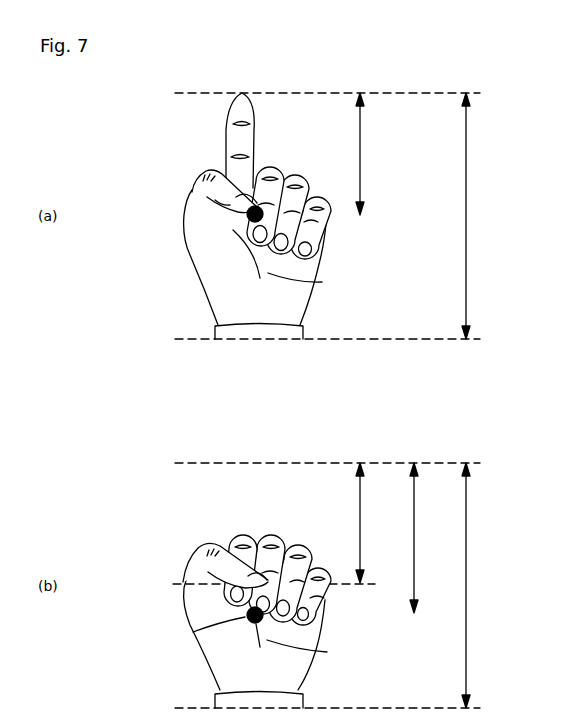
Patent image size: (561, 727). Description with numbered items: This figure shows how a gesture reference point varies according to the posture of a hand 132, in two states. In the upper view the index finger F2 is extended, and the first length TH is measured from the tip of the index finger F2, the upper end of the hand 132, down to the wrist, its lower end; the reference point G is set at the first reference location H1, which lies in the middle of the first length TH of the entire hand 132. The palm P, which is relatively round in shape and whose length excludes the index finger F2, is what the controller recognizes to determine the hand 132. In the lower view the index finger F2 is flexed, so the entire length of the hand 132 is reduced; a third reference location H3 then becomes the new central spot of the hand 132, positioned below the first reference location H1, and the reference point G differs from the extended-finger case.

The hand 132 is at (130, 80).
The index finger F2 is at (233, 133).
The reference point G is at (237, 207).
The palm P is at (322, 282).
The first reference location H1 is at (369, 338).
The third reference location H3 is at (424, 538).
The first length TH is at (475, 400).